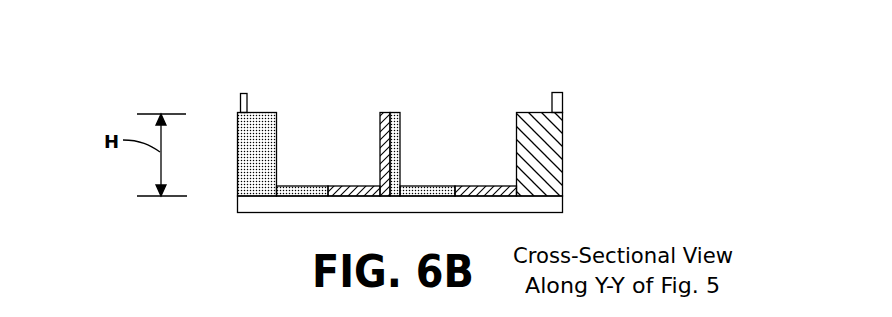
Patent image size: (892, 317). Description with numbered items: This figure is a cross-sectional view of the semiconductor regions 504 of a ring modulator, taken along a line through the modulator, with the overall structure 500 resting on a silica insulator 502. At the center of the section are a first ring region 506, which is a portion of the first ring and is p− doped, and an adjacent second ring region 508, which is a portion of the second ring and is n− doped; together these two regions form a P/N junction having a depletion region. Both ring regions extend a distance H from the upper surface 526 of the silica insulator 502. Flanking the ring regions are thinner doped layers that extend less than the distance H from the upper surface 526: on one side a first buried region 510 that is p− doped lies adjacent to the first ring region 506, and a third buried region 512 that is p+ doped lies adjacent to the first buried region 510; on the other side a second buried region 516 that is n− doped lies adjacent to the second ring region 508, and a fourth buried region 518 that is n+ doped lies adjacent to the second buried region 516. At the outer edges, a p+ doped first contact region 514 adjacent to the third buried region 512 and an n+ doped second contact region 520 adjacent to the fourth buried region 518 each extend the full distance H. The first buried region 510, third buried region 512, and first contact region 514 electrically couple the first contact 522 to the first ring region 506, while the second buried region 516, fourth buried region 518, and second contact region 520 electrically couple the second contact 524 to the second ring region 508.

The upper structure 500 is at (588, 112).
The silica insulator 502 is at (588, 197).
The semiconductor regions 504 is at (154, 38).
The first ring region 506 is at (386, 112).
The second ring region 508 is at (394, 112).
The first buried region 510 is at (365, 196).
The third buried region 512 is at (290, 186).
The first contact region 514 is at (258, 130).
The second buried region 516 is at (420, 196).
The fourth buried region 518 is at (491, 187).
The second contact region 520 is at (538, 112).
The first contact 522 is at (240, 96).
The second contact 524 is at (558, 92).
The upper surface 526 is at (253, 194).